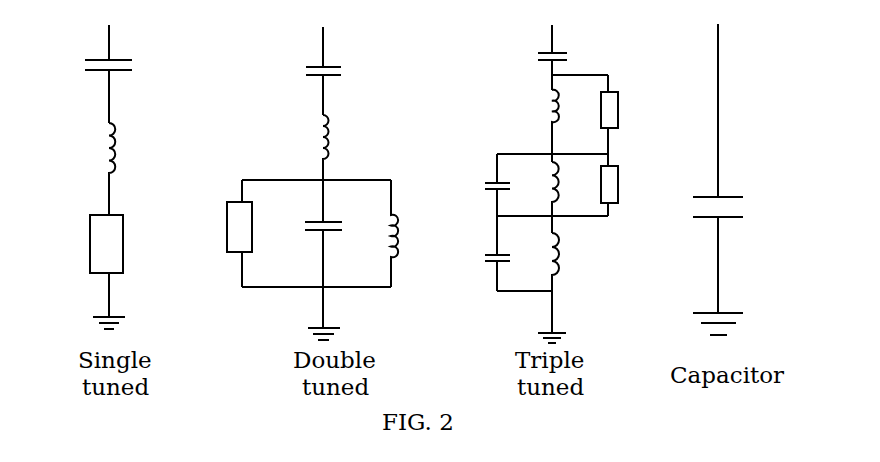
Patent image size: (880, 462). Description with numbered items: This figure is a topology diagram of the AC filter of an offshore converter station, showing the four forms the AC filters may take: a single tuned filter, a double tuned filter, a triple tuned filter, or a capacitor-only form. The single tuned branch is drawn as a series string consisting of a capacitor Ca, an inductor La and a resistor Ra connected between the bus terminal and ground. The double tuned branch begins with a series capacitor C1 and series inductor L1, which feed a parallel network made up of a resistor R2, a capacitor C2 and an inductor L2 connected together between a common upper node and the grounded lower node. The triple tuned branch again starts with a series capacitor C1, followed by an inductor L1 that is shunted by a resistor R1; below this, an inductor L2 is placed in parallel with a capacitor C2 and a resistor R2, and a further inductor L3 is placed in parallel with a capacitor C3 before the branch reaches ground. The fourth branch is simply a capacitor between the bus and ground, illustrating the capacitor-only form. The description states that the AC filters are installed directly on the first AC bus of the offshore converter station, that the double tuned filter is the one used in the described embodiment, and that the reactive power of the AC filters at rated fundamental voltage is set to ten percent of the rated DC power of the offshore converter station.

The capacitor of single tuned filter Ca is at (122, 74).
The inductor of single tuned filter La is at (127, 169).
The resistor of single tuned filter Ra is at (120, 272).
The first capacitor C1 is at (451, 70).
The first inductor L1 is at (456, 135).
The first resistor R1 is at (625, 120).
The second capacitor C2 is at (422, 220).
The second inductor L2 is at (489, 224).
The second resistor R2 is at (438, 226).
The third capacitor C3 is at (512, 253).
The third inductor L3 is at (570, 262).